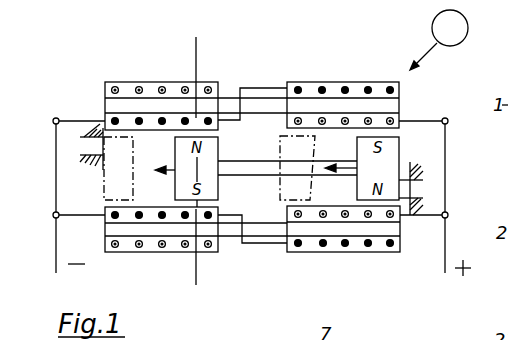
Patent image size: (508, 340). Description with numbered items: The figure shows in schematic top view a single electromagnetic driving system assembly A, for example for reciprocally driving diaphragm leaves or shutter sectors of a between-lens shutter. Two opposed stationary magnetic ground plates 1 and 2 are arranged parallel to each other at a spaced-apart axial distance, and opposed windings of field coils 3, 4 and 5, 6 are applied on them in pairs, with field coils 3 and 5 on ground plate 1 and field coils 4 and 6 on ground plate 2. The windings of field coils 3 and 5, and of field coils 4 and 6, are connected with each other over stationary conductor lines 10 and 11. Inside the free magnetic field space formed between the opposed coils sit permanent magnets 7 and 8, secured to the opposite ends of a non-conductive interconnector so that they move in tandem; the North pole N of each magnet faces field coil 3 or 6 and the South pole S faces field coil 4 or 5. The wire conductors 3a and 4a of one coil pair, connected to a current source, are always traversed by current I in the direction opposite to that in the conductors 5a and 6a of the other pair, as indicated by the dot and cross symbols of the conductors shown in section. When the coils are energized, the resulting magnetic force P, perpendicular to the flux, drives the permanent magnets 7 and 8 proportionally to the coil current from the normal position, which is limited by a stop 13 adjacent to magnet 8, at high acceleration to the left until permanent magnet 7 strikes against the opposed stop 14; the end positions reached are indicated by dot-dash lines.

The magnetic ground plate 1 is at (399, 105).
The magnetic ground plate 2 is at (400, 230).
The field coil 3 is at (151, 90).
The wire conductor 3a is at (114, 86).
The field coil 4 is at (152, 242).
The wire conductor 4a is at (117, 252).
The field coil 5 is at (331, 90).
The wire conductor 5a is at (298, 86).
The field coil 6 is at (331, 243).
The wire conductor 6a is at (297, 252).
The permanent magnet 7 is at (103, 185).
The permanent magnet 8 is at (280, 189).
The stationary conductor line 10 is at (259, 88).
The stationary conductor line 11 is at (258, 243).
The stop 13 is at (413, 188).
The stop 14 is at (83, 148).
The current I is at (195, 160).
The magnetic force P is at (256, 156).
The system assembly A is at (439, 40).